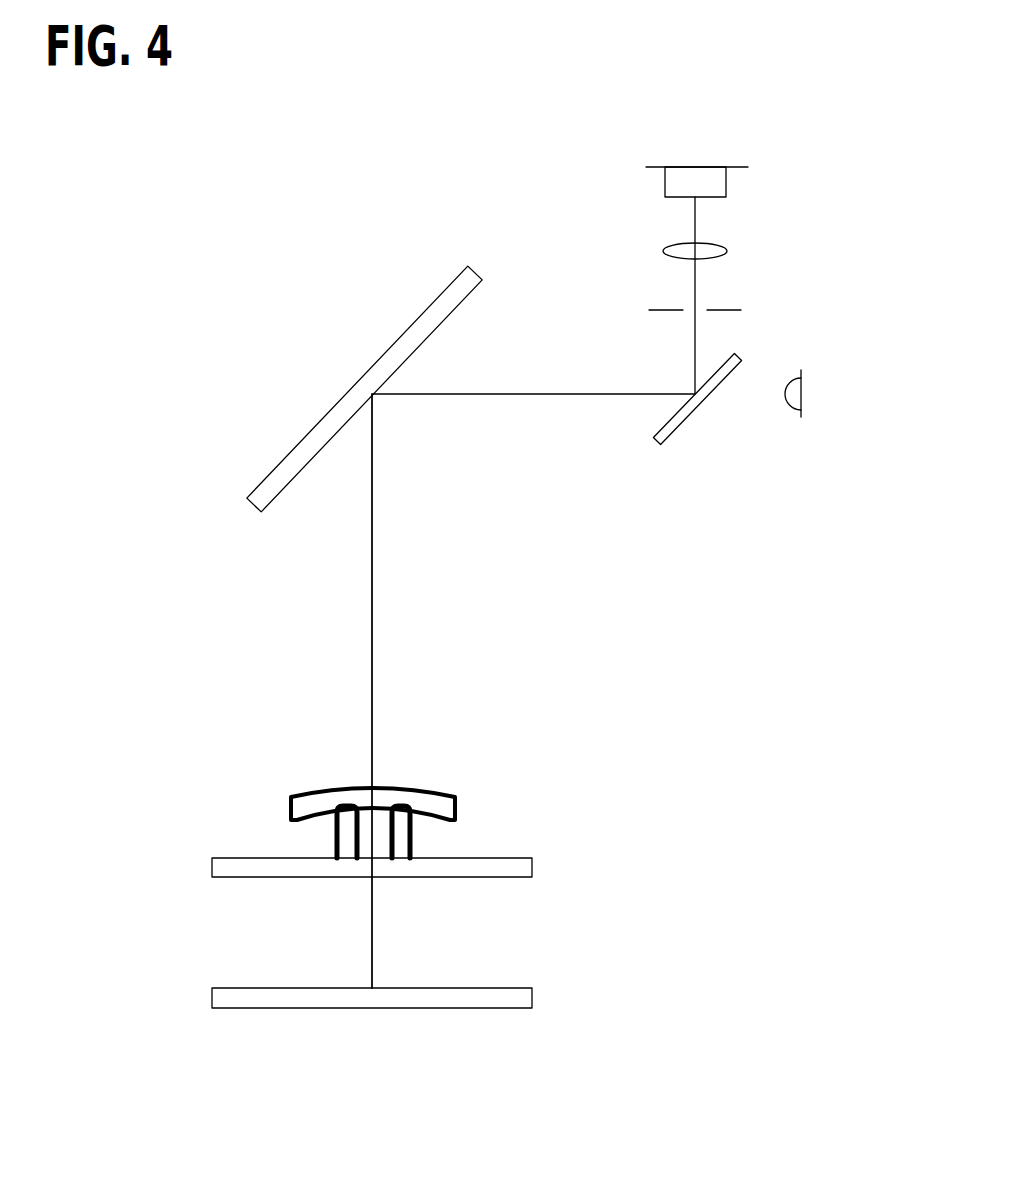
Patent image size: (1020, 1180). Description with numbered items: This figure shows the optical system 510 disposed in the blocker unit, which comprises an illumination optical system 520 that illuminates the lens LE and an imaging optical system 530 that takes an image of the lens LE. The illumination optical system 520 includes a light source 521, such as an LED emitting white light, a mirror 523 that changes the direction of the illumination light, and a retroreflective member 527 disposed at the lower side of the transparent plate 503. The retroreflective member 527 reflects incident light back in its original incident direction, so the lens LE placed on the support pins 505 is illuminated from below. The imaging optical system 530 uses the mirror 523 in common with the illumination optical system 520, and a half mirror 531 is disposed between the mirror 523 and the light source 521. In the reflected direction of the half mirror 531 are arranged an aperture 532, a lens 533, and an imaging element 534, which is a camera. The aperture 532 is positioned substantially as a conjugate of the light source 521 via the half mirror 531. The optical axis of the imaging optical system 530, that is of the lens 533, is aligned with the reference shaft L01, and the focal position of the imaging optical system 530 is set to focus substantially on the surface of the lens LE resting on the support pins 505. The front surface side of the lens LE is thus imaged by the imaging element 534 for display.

The optical system 510 is at (518, 546).
The illumination optical system 520 is at (782, 410).
The light source 521 is at (848, 383).
The mirror 523 is at (364, 367).
The imaging optical system 530 is at (678, 207).
The half mirror 531 is at (742, 370).
The aperture 532 is at (748, 277).
The lens 533 is at (752, 229).
The imaging element 534 is at (733, 150).
The reference shaft L01 is at (459, 691).
The lens LE is at (413, 771).
The support pins 505 is at (414, 802).
The transparent plate 503 is at (431, 833).
The retroreflective member 527 is at (439, 955).